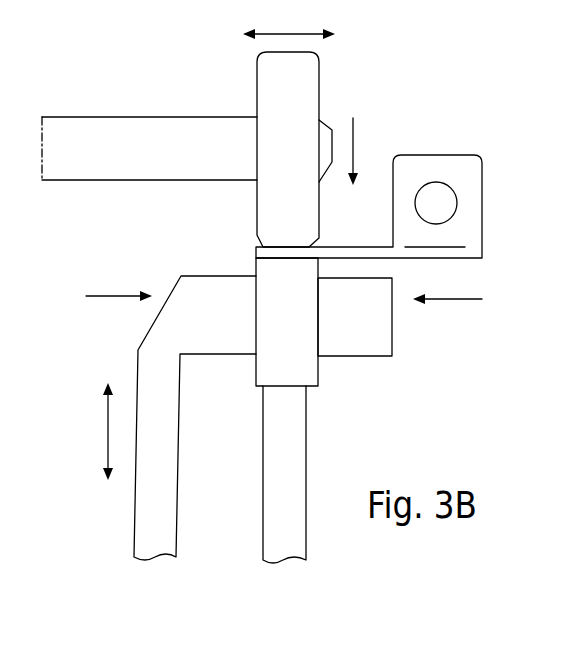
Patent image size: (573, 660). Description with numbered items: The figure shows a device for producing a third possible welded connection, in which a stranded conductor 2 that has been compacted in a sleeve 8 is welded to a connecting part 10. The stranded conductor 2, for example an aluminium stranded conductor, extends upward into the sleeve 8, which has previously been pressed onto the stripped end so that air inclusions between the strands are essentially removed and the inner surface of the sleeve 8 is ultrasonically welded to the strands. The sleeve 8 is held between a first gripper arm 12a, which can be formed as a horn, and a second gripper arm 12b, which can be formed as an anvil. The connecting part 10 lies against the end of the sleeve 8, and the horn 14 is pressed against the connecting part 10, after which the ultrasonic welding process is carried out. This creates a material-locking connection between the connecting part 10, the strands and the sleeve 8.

The horn 14 is at (148, 125).
The connecting part 10 is at (468, 192).
The sleeve 8 is at (294, 327).
The first gripper arm 12a is at (236, 327).
The second gripper arm 12b is at (373, 327).
The stranded conductor 2 is at (298, 464).